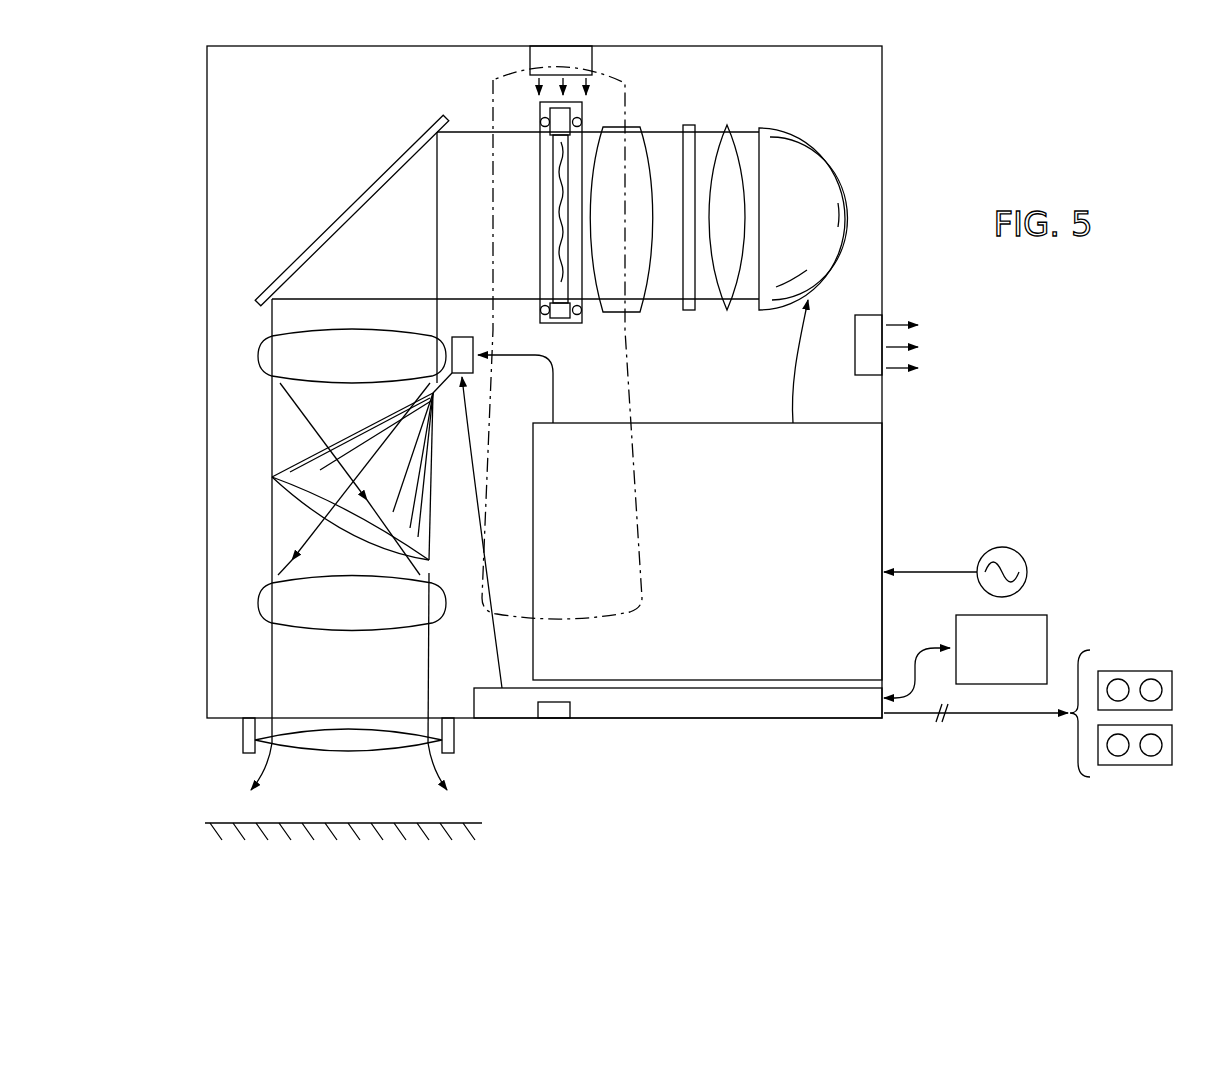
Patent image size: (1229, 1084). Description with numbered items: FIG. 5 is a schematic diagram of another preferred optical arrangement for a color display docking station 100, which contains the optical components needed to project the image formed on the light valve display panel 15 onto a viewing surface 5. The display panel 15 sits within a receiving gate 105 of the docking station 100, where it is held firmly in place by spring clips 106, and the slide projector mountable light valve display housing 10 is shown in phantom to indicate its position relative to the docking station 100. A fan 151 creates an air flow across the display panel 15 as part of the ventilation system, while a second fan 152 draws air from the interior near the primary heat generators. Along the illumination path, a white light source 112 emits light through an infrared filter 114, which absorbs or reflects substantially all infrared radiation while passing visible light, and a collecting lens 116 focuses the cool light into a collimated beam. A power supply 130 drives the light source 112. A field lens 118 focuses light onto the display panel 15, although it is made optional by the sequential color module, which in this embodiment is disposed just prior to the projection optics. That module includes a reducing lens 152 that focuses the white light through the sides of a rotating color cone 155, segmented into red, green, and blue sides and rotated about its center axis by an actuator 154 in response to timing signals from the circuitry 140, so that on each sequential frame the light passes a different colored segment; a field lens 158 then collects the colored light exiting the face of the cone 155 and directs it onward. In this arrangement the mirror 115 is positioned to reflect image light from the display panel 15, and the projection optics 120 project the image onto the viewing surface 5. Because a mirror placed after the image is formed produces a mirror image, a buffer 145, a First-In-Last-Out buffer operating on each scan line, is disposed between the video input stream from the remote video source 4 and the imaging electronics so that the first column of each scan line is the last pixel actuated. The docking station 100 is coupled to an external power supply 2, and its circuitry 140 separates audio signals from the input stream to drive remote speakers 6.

The color display docking station 100 is at (893, 78).
The light valve display housing 10 is at (493, 80).
The fan 151 is at (562, 53).
The receiving gate 105 is at (558, 325).
The spring clips 106 is at (582, 120).
The light valve display panel 15 is at (553, 228).
The field lens 118 is at (640, 313).
The infrared filter 114 is at (688, 125).
The collecting lens 116 is at (720, 290).
The white light source 112 is at (777, 230).
The mirror 115 is at (343, 215).
The reducing lens / second fan 152 is at (336, 365).
The actuator 154 is at (462, 337).
The rotating color cone 155 is at (388, 453).
The field lens 158 is at (330, 616).
The projection optics 120 is at (348, 770).
The viewing surface 5 is at (455, 822).
The power supply 130 is at (721, 555).
The circuitry 140 is at (668, 720).
The buffer 145 is at (553, 720).
The external power supply 2 is at (1010, 547).
The remote video source 4 is at (993, 679).
The remote speakers 6 is at (1178, 718).